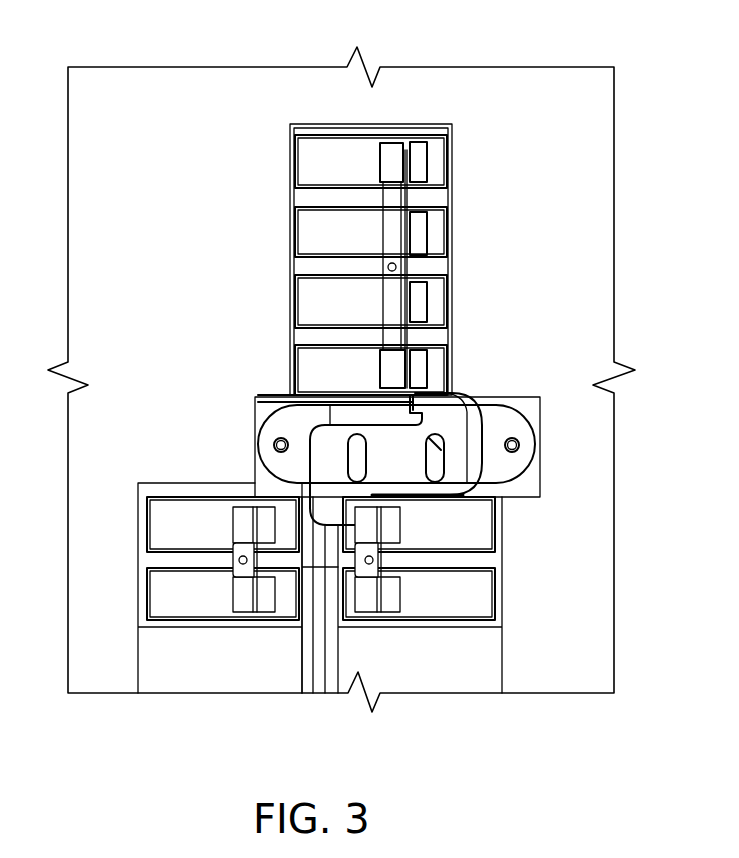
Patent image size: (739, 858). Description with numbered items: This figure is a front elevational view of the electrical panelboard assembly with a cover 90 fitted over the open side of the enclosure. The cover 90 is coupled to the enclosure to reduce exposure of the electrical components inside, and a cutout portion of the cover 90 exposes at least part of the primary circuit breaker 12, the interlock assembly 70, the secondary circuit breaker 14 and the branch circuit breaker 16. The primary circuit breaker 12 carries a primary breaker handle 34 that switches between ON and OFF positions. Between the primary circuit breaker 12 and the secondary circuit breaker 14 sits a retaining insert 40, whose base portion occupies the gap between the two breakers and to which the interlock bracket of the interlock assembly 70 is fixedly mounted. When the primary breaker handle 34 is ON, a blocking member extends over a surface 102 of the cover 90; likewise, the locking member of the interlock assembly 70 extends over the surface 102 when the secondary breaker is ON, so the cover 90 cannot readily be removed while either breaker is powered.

The cover 90 is at (341, 367).
The surface of the cover 102 is at (225, 250).
The primary circuit breaker 12 is at (323, 160).
The primary breaker handle 34 is at (390, 200).
The retaining insert 40 is at (268, 418).
The interlock assembly 70 is at (483, 398).
The branch circuit breaker 16 is at (190, 597).
The secondary circuit breaker 14 is at (468, 595).